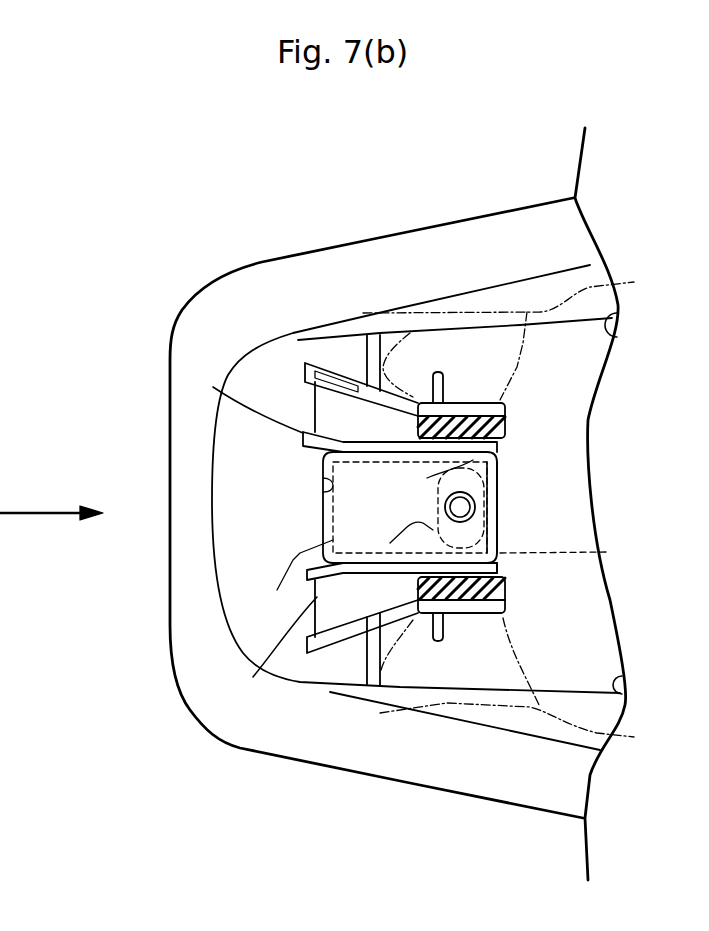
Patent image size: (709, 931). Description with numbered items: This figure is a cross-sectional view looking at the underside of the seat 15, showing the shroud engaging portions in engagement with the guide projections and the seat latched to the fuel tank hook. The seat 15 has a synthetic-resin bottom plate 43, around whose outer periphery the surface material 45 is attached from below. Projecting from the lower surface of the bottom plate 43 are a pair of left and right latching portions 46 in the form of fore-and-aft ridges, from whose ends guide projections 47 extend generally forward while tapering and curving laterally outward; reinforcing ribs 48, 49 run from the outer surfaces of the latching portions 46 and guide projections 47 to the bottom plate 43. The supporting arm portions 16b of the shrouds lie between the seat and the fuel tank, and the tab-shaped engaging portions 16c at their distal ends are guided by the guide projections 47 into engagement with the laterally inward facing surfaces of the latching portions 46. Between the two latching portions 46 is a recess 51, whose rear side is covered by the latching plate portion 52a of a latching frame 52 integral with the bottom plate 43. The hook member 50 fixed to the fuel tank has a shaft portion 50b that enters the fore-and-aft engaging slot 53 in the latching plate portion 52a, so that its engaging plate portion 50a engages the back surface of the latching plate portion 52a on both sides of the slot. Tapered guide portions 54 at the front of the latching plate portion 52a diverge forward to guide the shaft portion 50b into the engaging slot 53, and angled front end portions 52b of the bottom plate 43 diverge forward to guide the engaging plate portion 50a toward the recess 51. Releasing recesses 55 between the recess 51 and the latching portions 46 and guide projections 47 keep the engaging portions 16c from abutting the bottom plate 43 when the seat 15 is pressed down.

The seat 15 is at (529, 190).
The supporting arm portion 16b is at (527, 513).
The engaging portion 16c is at (500, 425).
The bottom plate 43 is at (552, 525).
The surface material 45 is at (381, 235).
The latching portion 46 is at (480, 403).
The guide projection 47 is at (316, 360).
The reinforcing rib 48 is at (448, 390).
The reinforcing rib 49 is at (412, 330).
The hook member 50 is at (430, 508).
The engaging plate portion 50a is at (586, 559).
The shaft portion 50b is at (497, 538).
The recess 51 is at (322, 486).
The latching frame 52 is at (497, 470).
The latching plate portion 52a is at (427, 478).
The front end portion 52b is at (247, 524).
The engaging slot 53 is at (497, 565).
The tapered guide portion 54 is at (440, 487).
The releasing recess 55 is at (332, 392).